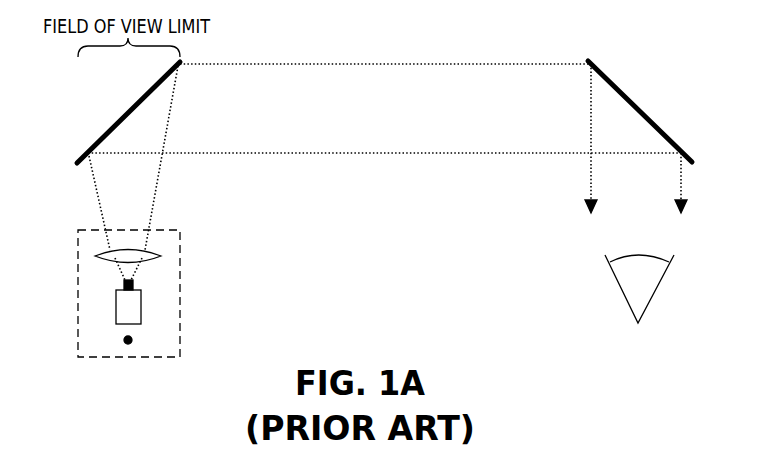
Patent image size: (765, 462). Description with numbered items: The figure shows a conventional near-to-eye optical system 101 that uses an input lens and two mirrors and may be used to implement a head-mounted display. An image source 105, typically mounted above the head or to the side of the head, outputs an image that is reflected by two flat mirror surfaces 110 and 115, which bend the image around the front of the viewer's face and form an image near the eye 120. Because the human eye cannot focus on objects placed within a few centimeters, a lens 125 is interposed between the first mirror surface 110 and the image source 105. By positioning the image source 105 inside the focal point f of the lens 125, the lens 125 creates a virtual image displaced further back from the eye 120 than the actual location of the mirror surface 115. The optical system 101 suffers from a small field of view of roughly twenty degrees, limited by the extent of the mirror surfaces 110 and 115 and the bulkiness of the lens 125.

The near-to-eye optical system 101 is at (391, 211).
The image source 105 is at (117, 305).
The first mirror surface 110 is at (93, 140).
The second mirror surface 115 is at (650, 119).
The eye 120 is at (654, 295).
The lens 125 is at (100, 254).